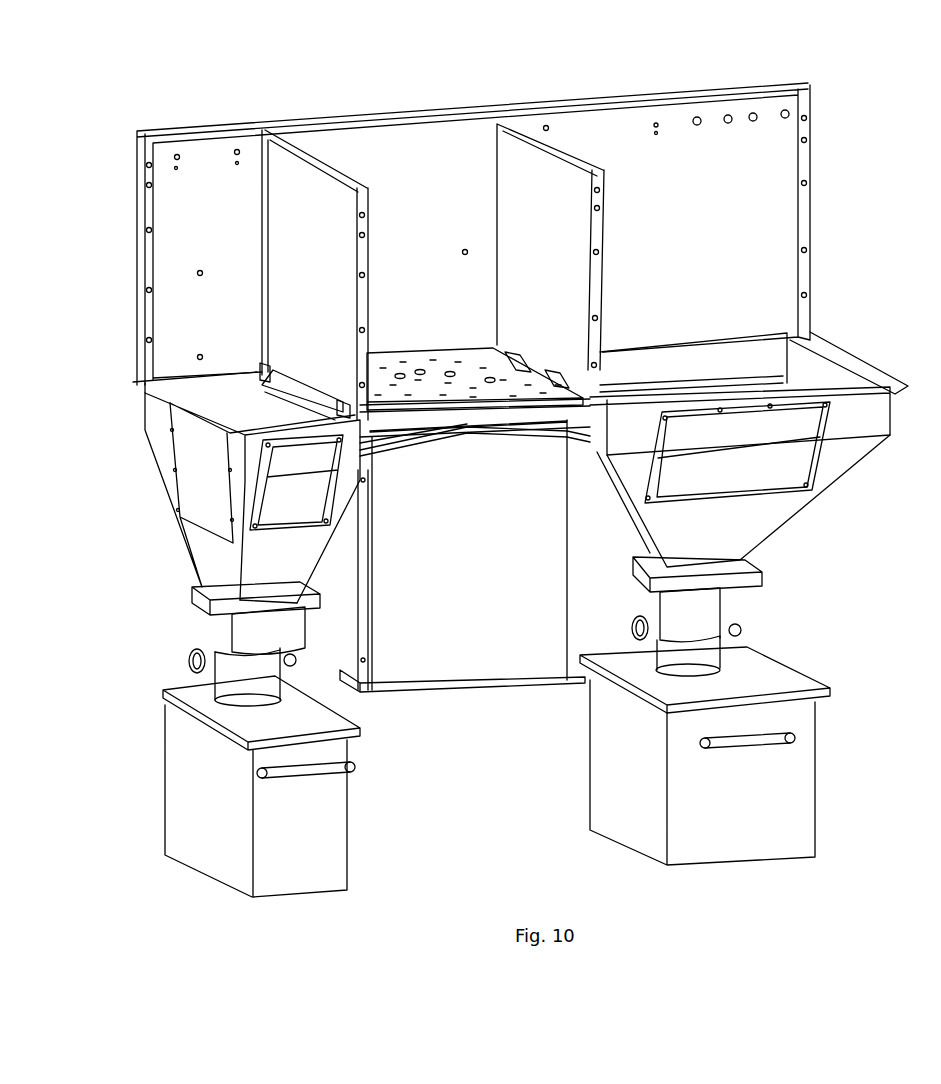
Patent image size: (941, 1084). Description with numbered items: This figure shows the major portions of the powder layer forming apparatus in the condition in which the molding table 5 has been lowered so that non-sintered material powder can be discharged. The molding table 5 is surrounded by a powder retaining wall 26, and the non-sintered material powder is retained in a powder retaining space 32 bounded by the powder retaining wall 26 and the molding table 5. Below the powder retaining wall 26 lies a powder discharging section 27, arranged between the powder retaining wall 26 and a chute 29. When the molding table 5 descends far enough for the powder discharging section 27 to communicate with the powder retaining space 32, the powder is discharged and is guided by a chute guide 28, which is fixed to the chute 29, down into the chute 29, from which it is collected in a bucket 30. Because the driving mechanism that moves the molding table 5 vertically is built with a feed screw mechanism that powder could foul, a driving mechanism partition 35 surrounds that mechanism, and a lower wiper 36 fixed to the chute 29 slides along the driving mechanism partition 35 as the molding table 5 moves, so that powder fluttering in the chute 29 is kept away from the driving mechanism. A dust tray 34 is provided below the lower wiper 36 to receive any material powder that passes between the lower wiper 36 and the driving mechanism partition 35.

The molding table 5 is at (418, 352).
The powder retaining wall 26 is at (533, 165).
The powder discharging section 27 is at (512, 330).
The chute guide 28 is at (305, 403).
The chute 29 is at (200, 556).
The bucket 30 is at (185, 822).
The powder retaining space 32 is at (428, 256).
The dust tray 34 is at (505, 685).
The driving mechanism partition 35 is at (415, 663).
The lower wiper 36 is at (410, 446).